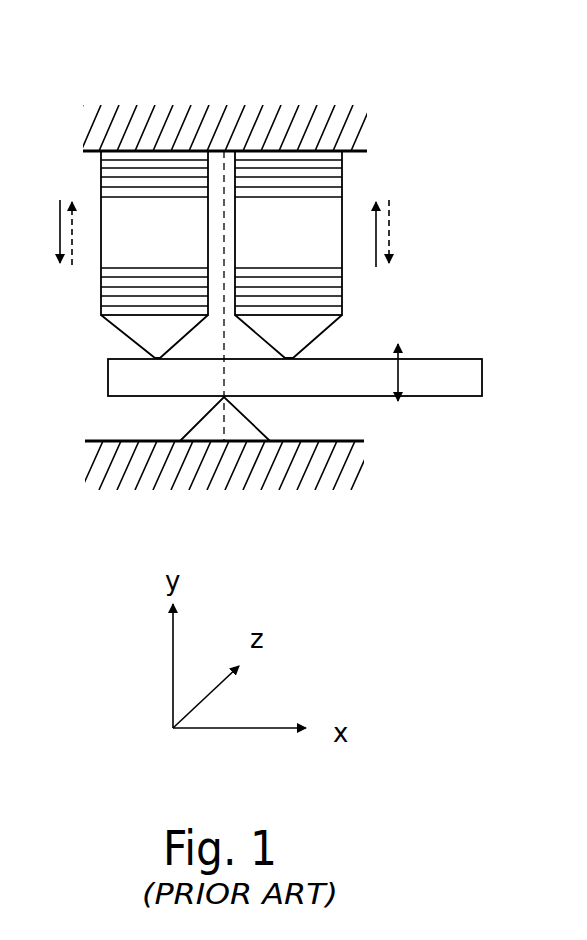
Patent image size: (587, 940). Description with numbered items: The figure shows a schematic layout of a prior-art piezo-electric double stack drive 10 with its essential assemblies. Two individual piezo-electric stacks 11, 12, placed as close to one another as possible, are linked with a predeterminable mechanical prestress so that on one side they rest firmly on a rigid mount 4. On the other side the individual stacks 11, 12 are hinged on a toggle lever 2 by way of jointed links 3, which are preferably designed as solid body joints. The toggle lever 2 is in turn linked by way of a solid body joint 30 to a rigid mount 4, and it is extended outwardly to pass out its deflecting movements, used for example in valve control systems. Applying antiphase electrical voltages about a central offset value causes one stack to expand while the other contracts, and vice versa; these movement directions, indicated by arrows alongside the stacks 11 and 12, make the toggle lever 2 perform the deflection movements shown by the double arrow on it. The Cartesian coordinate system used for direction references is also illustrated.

The double stack drive 10 is at (221, 232).
The piezo-electric stack 11 is at (172, 248).
The piezo-electric stack 12 is at (307, 248).
The jointed links 3 is at (157, 333).
The toggle lever 2 is at (413, 373).
The solid body joint 30 is at (233, 425).
The rigid mount 4 is at (347, 130).